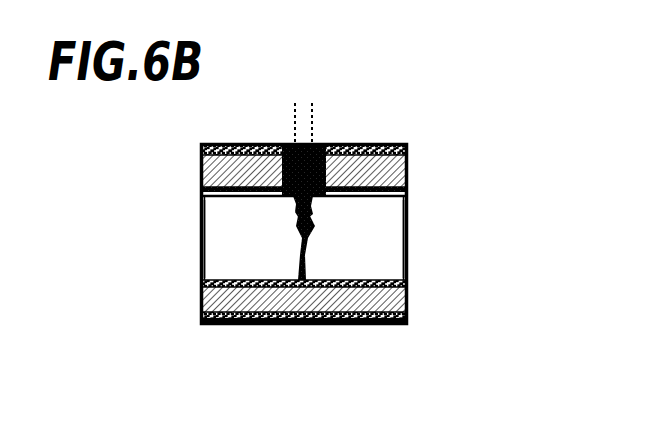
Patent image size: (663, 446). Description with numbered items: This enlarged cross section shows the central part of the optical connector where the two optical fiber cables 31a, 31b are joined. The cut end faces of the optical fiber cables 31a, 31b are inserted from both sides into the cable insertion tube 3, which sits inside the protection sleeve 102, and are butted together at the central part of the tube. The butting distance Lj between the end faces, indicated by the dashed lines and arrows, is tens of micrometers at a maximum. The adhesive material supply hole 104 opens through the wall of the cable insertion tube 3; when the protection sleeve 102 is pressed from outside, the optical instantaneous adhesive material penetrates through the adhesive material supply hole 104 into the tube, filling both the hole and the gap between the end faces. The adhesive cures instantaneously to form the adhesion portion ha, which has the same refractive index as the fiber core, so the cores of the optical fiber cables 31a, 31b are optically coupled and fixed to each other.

The protection sleeve 102 is at (388, 143).
The adhesive material supply hole 104 is at (326, 143).
The cable insertion tube 3 is at (202, 163).
The optical fiber cable 31a is at (207, 243).
The optical fiber cable 31b is at (402, 243).
The adhesion portion ha is at (283, 143).
The butting distance Lj is at (340, 100).